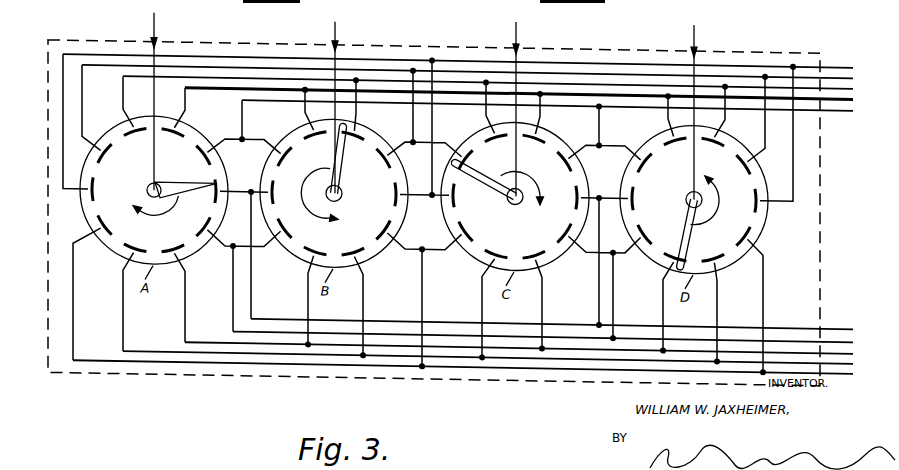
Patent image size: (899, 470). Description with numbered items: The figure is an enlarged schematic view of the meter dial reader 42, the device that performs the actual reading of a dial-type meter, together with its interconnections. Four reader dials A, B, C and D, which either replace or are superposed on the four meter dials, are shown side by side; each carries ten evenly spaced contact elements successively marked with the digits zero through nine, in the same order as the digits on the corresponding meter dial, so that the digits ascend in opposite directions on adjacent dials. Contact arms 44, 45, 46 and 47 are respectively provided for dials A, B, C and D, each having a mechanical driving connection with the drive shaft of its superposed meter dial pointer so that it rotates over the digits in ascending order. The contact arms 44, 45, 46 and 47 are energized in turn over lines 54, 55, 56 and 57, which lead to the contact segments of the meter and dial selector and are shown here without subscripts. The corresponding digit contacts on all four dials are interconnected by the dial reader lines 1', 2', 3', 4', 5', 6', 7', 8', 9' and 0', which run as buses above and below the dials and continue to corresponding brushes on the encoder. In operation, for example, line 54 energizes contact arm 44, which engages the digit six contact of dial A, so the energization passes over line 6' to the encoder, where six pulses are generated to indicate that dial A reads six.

The meter dial reader 42 is at (460, 213).
The contact arm 44 is at (154, 190).
The contact arm 45 is at (334, 193).
The contact arm 46 is at (515, 196).
The contact arm 47 is at (694, 199).
The line 54 is at (132, 99).
The line 55 is at (313, 107).
The line 56 is at (494, 108).
The line 57 is at (674, 111).
The dial reader line 1' is at (466, 61).
The dial reader line 2' is at (476, 71).
The dial reader line 3' is at (496, 83).
The dial reader line 4' is at (528, 94).
The dial reader line 5' is at (556, 107).
The dial reader line 6' is at (559, 323).
The dial reader line 7' is at (551, 337).
The dial reader line 8' is at (526, 347).
The dial reader line 9' is at (495, 358).
The dial reader line 0' is at (467, 370).